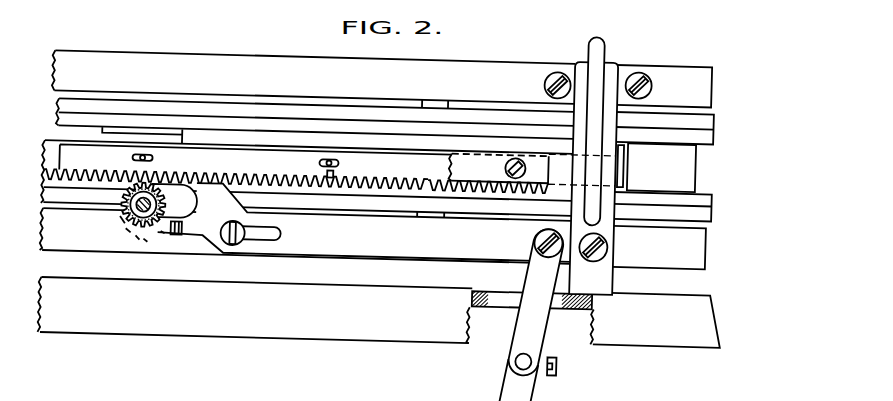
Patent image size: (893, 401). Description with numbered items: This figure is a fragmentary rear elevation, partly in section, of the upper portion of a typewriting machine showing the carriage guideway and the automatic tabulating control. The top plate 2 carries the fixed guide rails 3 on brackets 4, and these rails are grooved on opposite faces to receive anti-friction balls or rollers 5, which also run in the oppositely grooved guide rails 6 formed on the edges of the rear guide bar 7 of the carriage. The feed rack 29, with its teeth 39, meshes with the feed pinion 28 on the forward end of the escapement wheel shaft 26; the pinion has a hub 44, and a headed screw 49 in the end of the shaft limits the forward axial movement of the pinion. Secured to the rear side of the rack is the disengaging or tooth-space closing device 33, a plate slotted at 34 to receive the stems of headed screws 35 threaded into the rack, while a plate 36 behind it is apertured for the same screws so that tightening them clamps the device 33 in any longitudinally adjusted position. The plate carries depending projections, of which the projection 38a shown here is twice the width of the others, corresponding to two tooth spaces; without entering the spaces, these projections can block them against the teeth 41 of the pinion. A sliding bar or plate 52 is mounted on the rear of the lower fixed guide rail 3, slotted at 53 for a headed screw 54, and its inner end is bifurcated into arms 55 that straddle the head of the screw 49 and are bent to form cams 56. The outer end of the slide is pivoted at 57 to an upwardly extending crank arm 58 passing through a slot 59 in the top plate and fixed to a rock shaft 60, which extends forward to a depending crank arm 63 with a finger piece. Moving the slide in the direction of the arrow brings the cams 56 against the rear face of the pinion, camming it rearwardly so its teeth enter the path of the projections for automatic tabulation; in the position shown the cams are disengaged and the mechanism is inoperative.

The top plate 2 is at (379, 313).
The fixed guide rails 3 is at (662, 167).
The brackets 4 is at (614, 182).
The anti-friction balls or rollers 5 is at (432, 90).
The guide rails 6 is at (711, 121).
The rear guide bar 7 is at (661, 167).
The escapement wheel shaft 26 is at (123, 198).
The feed pinion 28 is at (130, 228).
The feed rack 29 is at (46, 162).
The disengaging or tooth-space closing device 33 is at (296, 168).
The slots 34 is at (154, 156).
The headed screws 35 is at (144, 151).
The plate 36 is at (499, 169).
The depending projection 38a is at (333, 170).
The teeth 39 is at (84, 178).
The teeth 41 is at (140, 236).
The hub 44 is at (148, 238).
The headed screw 49 is at (124, 218).
The sliding bar or plate 52 is at (305, 236).
The slot 53 is at (284, 228).
The headed screw 54 is at (360, 236).
The arms 55 is at (165, 229).
The cams 56 is at (190, 182).
The pivot 57 is at (537, 229).
The crank arm 58 is at (535, 303).
The slot 59 is at (504, 296).
The rock shaft 60 is at (521, 350).
The depending crank arm 63 is at (545, 384).